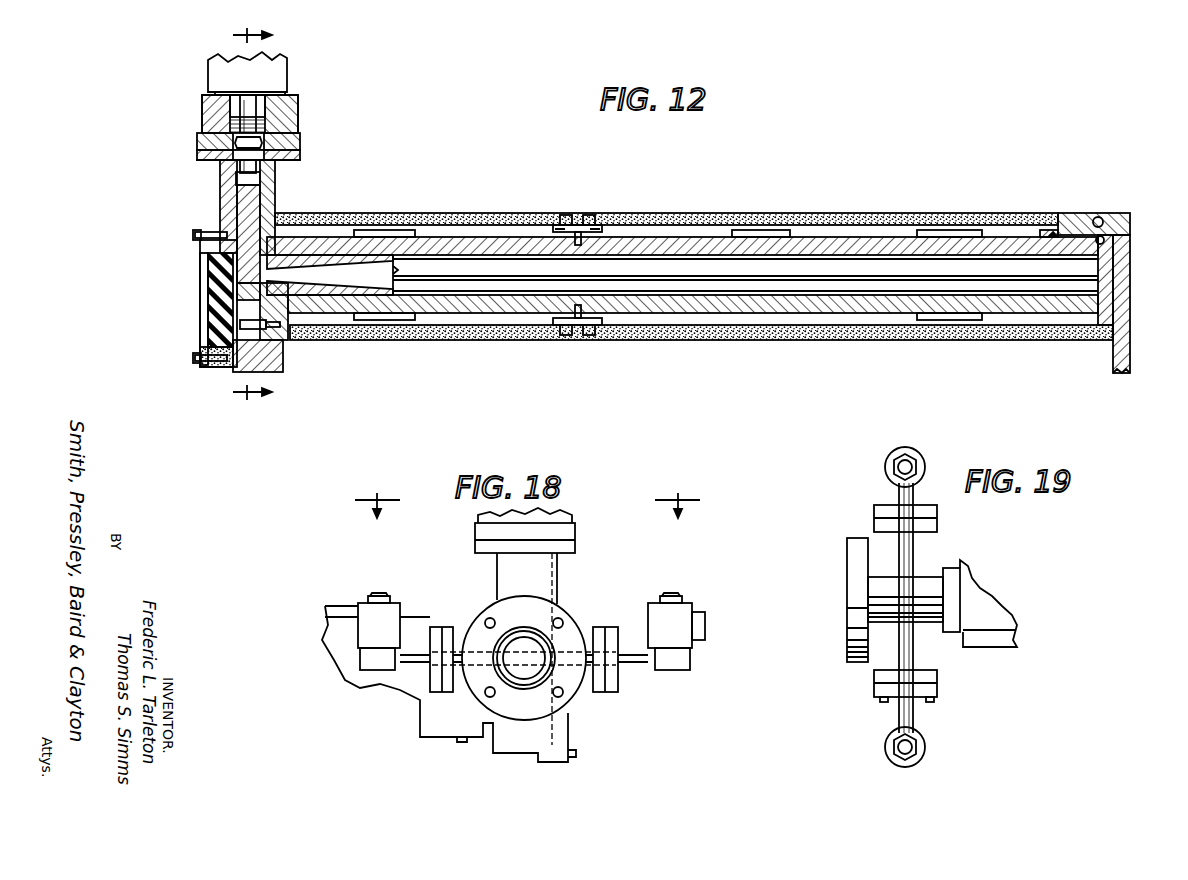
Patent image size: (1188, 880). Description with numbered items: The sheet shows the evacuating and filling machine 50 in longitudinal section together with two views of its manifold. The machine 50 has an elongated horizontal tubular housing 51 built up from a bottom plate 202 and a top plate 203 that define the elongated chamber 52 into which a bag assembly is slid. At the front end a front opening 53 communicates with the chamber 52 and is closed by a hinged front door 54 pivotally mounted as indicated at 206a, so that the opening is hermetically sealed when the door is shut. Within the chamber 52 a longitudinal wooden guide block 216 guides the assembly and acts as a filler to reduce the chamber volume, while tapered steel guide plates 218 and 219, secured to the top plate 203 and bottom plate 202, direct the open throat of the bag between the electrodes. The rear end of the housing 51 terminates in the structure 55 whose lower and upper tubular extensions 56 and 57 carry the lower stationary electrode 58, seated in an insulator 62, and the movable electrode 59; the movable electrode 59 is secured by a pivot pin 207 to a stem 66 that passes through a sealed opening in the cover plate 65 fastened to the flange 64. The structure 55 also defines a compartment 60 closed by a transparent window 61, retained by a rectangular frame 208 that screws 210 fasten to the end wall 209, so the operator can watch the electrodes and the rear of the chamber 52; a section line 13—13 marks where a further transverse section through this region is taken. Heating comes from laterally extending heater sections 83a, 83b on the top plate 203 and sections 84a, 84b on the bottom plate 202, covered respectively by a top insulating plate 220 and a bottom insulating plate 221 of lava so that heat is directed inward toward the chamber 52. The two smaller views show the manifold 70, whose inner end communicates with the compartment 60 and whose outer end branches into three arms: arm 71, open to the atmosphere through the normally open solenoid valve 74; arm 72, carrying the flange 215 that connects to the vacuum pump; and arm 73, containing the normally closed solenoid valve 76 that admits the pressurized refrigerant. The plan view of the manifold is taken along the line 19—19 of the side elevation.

In FIG. 12, the section line 13- 13 is at (242, 209).
In FIG. 18, the section line 19— 19 is at (527, 497).
In FIG. 12, the machine 50 is at (470, 193).
In FIG. 12, the tubular housing 51 is at (674, 238).
In FIG. 12, the chamber 52 is at (840, 264).
In FIG. 12, the front opening 53 is at (1130, 256).
In FIG. 12, the front door 54 is at (1130, 360).
In FIG. 12, the rear end structure 55 is at (220, 213).
In FIG. 12, the lower tubular extension 56 is at (284, 362).
In FIG. 12, the upper tubular extension 57 is at (262, 191).
In FIG. 12, the lower stationary electrode 58 is at (208, 306).
In FIG. 12, the movable electrode 59 is at (276, 206).
In FIG. 12, the compartment 60 is at (208, 280).
In FIG. 12, the transparent window 61 is at (205, 325).
In FIG. 12, the insulator 62 is at (276, 273).
In FIG. 12, the flange 64 is at (298, 152).
In FIG. 12, the cover plate 65 is at (298, 140).
In FIG. 12, the stem 66 is at (250, 108).
In FIG. 18, the manifold 70 is at (528, 672).
In FIG. 19, the manifold 70 is at (912, 578).
In FIG. 18, the arm 71 is at (460, 650).
In FIG. 19, the arm 71 is at (899, 550).
In FIG. 19, the arm 72 is at (890, 626).
In FIG. 18, the arm 73 is at (605, 628).
In FIG. 19, the arm 73 is at (911, 652).
In FIG. 18, the solenoid controlled valve 74 is at (382, 622).
In FIG. 19, the solenoid controlled valve 74 is at (888, 476).
In FIG. 18, the solenoid controlled valve 76 is at (680, 616).
In FIG. 19, the solenoid controlled valve 76 is at (926, 748).
In FIG. 12, the heating unit section 83a is at (402, 229).
In FIG. 12, the heating unit section 83b is at (579, 223).
In FIG. 12, the heating unit section 84a is at (405, 321).
In FIG. 12, the heating unit section 84b is at (579, 332).
In FIG. 12, the bottom plate 202 is at (464, 316).
In FIG. 12, the top plate 203 is at (465, 240).
In FIG. 12, the pivotal mounting 206a is at (1094, 218).
In FIG. 12, the pivot pin 207 is at (262, 175).
In FIG. 12, the frame 208 is at (205, 366).
In FIG. 12, the end wall 209 is at (220, 184).
In FIG. 12, the screws 210 is at (195, 236).
In FIG. 18, the flange 215 is at (560, 616).
In FIG. 19, the flange 215 is at (852, 590).
In FIG. 12, the guide block 216 is at (680, 288).
In FIG. 12, the tapered guide plate 218 is at (340, 266).
In FIG. 12, the tapered guide plate 219 is at (340, 286).
In FIG. 12, the top insulating plate 220 is at (790, 214).
In FIG. 12, the bottom insulating plate 221 is at (800, 340).